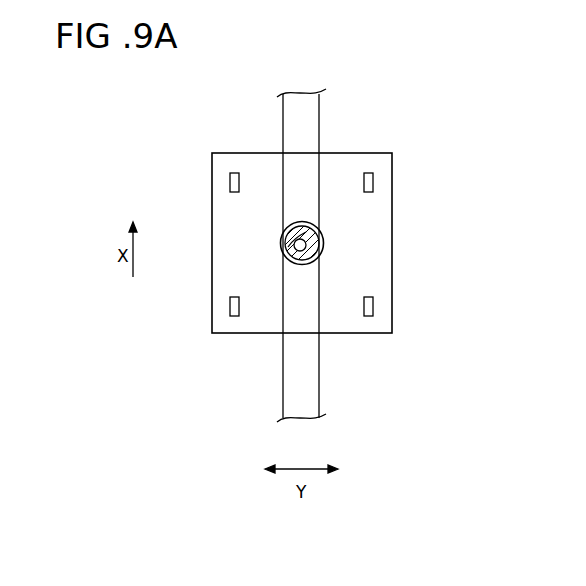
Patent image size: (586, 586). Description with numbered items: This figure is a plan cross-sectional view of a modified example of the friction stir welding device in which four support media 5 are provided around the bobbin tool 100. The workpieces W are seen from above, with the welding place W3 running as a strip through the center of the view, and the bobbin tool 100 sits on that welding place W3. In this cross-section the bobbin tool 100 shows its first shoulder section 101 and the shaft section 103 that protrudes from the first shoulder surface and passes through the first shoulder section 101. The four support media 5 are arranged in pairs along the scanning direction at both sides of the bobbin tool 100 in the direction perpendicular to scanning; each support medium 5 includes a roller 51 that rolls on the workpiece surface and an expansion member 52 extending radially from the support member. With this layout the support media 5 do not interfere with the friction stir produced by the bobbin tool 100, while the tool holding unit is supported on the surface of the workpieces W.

The support medium 5 is at (393, 211).
The roller 51 is at (230, 184).
The expansion member 52 is at (380, 273).
The bobbin tool 100 is at (323, 241).
The first shoulder section 101 is at (284, 250).
The shaft section 103 is at (286, 241).
The welding place W3 is at (319, 127).
The workpieces W is at (453, 120).